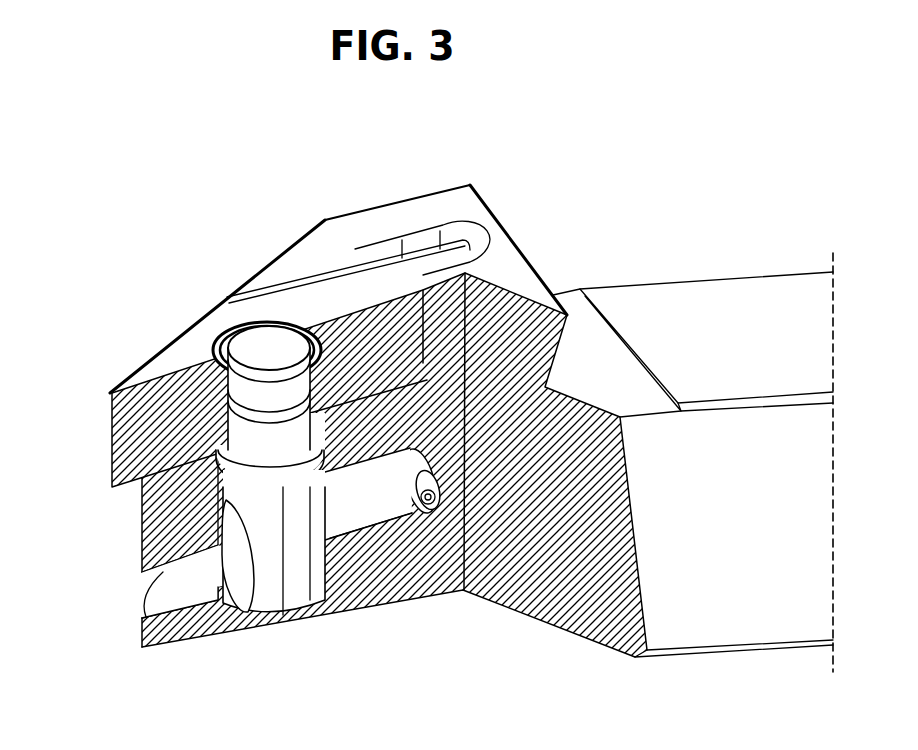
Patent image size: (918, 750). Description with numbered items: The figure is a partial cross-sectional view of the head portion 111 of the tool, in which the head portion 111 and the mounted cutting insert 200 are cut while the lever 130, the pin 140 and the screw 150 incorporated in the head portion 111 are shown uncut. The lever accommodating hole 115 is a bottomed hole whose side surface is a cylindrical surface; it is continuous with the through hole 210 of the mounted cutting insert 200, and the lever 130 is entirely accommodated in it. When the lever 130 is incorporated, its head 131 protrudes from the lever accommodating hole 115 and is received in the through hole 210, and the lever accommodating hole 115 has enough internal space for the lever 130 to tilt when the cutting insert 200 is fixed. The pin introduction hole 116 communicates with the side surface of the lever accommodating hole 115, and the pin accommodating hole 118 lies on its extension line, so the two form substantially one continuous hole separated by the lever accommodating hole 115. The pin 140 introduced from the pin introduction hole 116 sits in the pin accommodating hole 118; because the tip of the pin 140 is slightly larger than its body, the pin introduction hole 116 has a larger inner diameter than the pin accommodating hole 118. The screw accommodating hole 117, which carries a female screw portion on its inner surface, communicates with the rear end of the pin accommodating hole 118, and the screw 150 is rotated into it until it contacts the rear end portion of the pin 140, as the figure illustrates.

The head portion 111 is at (125, 163).
The head 131 is at (260, 347).
The through hole 210 is at (273, 320).
The cutting insert 200 is at (175, 353).
The pin introduction hole 116 is at (145, 594).
The lever accommodating hole 115 is at (228, 607).
The lever 130 is at (293, 603).
The pin 140 is at (343, 540).
The pin accommodating hole 118 is at (372, 537).
The screw 150 is at (428, 500).
The screw accommodating hole 117 is at (448, 487).